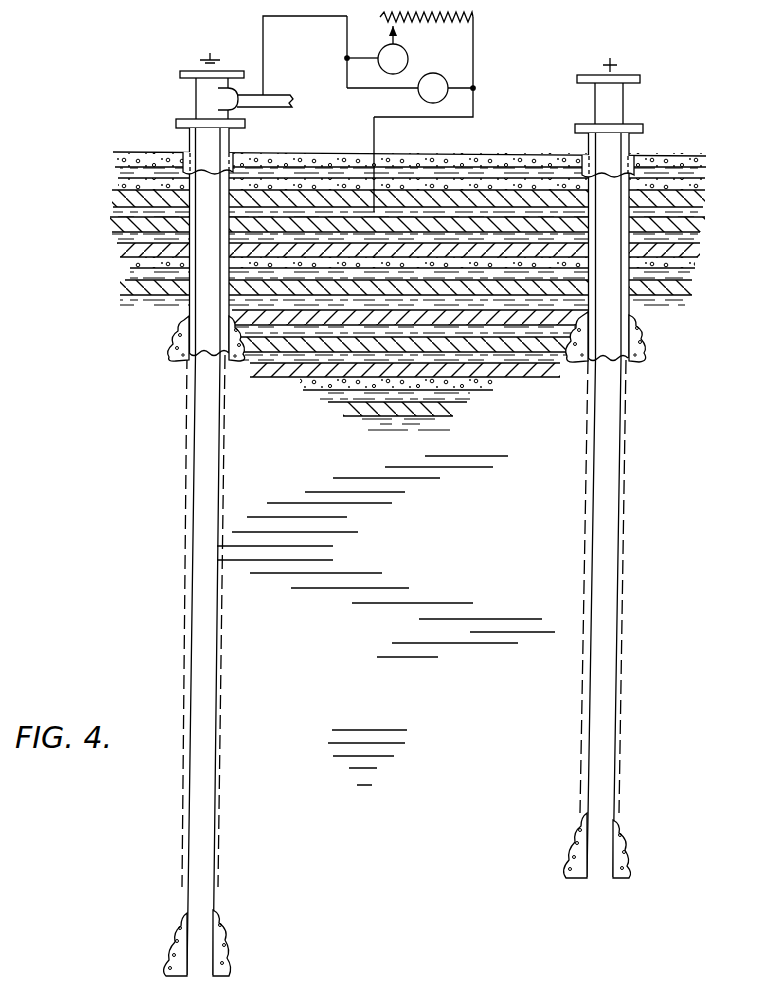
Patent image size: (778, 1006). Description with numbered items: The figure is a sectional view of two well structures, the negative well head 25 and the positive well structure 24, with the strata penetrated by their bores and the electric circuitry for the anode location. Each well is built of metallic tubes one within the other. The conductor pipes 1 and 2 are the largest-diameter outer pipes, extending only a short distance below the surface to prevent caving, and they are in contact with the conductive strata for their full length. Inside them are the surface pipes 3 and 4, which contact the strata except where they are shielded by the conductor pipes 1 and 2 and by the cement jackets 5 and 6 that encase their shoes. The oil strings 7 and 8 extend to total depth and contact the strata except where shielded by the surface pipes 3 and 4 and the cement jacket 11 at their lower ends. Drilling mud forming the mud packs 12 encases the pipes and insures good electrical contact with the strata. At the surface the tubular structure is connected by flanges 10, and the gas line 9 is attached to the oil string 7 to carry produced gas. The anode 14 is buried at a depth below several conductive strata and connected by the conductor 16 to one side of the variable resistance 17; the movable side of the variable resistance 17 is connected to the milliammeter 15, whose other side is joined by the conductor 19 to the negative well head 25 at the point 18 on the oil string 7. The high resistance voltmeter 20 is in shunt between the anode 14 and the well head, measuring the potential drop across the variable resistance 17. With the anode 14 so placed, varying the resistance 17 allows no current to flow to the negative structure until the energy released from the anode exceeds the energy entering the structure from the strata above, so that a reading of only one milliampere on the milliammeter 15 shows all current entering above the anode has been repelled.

The conductor pipe 1 is at (176, 161).
The conductor pipe 2 is at (636, 165).
The surface pipe 3 is at (187, 137).
The surface pipe 4 is at (631, 148).
The cement jacket 5 is at (168, 358).
The cement jacket 6 is at (647, 348).
The oil string 7 is at (191, 87).
The oil string 8 is at (626, 98).
The gas line 9 is at (273, 111).
The flange 10 is at (173, 121).
The cement jacket 11 is at (167, 957).
The mud pack 12 is at (184, 317).
The anode 14 is at (371, 214).
The milliammeter 15 is at (411, 57).
The conductor 16 is at (478, 58).
The variable resistance 17 is at (479, 16).
The connection point 18 is at (266, 92).
The conductor 19 is at (296, 19).
The high resistance voltmeter 20 is at (416, 94).
The positive well structure 24 is at (619, 58).
The negative well head 25 is at (210, 55).